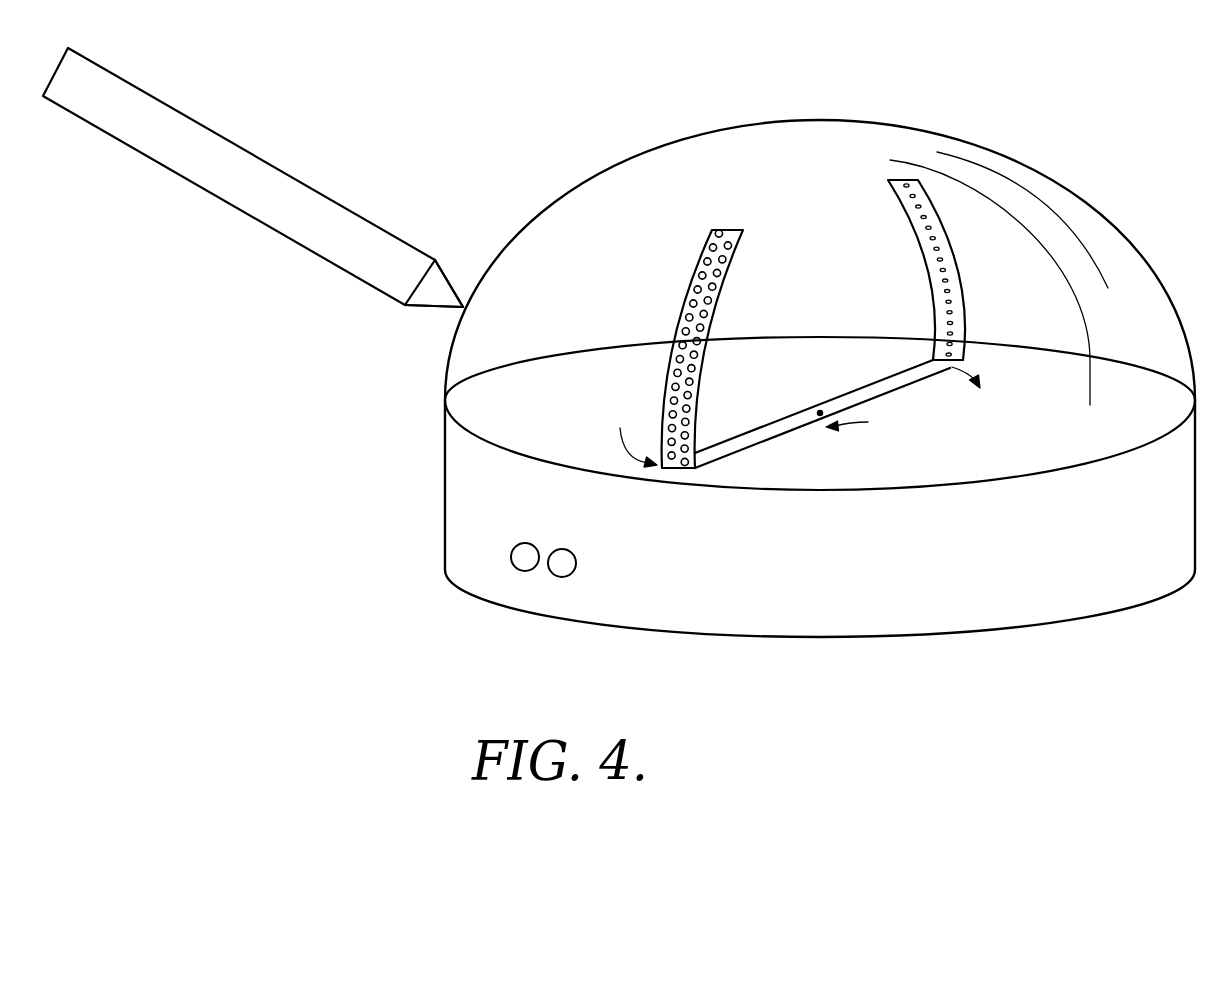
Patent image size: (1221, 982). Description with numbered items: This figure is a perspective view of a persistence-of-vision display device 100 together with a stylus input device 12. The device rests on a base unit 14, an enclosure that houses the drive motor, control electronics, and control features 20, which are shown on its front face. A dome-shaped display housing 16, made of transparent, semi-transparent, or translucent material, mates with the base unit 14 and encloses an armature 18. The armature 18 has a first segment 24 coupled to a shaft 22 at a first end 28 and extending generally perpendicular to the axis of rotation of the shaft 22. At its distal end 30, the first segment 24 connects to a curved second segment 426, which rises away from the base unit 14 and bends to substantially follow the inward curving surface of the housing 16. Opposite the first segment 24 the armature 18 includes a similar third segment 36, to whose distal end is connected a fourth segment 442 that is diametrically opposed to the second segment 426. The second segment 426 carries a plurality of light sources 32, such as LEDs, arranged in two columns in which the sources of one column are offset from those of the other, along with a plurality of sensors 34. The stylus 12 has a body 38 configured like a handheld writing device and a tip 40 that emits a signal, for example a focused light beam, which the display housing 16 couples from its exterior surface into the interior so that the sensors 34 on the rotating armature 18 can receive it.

The input system 100 is at (799, 344).
The stylus input device 12 is at (269, 177).
The body 38 is at (269, 177).
The tip 40 is at (463, 307).
The display housing 16 is at (910, 123).
The base unit 14 is at (799, 518).
The control features 20 is at (572, 547).
The light sources 32 is at (722, 327).
The second segment 426 is at (717, 297).
The distal end 30 is at (631, 436).
The third segment 36 is at (958, 296).
The fourth segment 442 is at (960, 303).
The sensors 34 is at (915, 198).
The first segment 24 is at (747, 448).
The armature 18 is at (822, 420).
The shaft 22 is at (820, 410).
The first end 28 is at (861, 423).